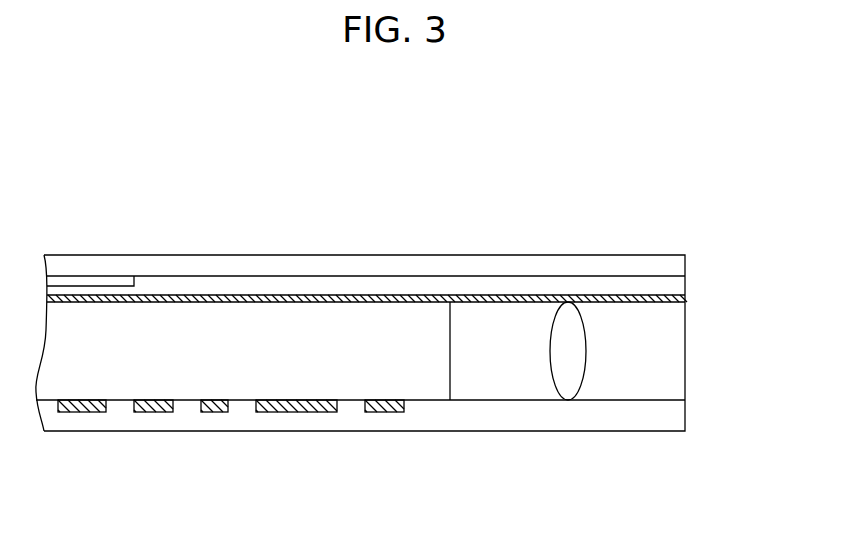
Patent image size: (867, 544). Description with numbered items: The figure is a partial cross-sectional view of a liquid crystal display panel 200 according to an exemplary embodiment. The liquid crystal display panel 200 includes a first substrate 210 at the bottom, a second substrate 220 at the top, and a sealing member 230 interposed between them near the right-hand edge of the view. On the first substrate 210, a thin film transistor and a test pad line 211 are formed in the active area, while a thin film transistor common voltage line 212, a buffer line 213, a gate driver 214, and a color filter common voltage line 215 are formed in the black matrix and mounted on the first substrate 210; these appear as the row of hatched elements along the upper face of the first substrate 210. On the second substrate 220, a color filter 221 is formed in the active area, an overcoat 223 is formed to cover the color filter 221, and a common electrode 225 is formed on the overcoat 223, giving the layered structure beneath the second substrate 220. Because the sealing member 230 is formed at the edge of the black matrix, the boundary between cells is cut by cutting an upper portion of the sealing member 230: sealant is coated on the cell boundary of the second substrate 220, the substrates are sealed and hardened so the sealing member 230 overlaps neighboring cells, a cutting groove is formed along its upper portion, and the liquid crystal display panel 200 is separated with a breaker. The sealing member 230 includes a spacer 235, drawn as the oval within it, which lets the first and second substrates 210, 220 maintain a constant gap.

The liquid crystal display panel 200 is at (367, 158).
The first substrate 210 is at (492, 415).
The test pad line 211 is at (80, 412).
The thin film transistor common voltage (Vcom) line 212 is at (150, 412).
The buffer line 213 is at (210, 412).
The gate driver 214 is at (291, 412).
The color filter common voltage (Vcom) line 215 is at (381, 412).
The second substrate 220 is at (456, 266).
The color filter 221 is at (98, 283).
The overcoat 223 is at (215, 287).
The common electrode 225 is at (339, 297).
The sealing member 230 is at (673, 350).
The spacer 235 is at (575, 376).